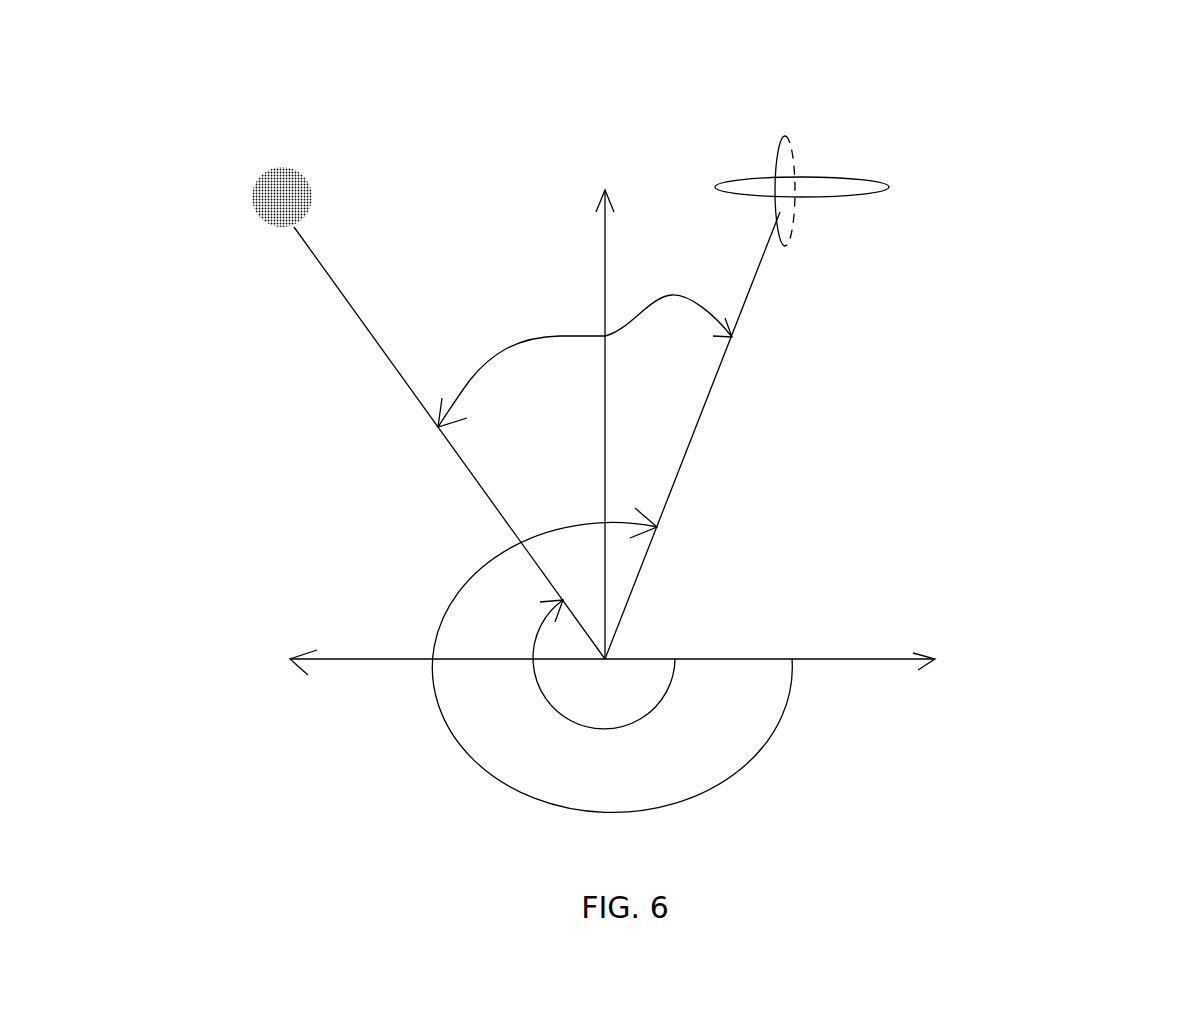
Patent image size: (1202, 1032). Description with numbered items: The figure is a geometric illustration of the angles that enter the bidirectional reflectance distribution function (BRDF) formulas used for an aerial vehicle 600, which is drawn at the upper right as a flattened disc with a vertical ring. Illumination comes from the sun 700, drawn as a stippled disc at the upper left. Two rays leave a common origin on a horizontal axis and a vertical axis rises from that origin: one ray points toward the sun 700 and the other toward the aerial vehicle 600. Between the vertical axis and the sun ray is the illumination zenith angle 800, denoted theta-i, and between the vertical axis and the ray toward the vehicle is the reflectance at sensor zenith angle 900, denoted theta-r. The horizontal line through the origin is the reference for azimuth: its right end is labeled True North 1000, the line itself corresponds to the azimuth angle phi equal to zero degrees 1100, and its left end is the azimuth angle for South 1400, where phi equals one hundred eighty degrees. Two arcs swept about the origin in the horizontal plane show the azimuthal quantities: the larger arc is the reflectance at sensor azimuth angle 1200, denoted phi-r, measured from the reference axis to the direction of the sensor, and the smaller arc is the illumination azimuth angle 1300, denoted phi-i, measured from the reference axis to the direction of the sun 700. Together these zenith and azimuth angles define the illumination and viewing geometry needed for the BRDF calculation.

The aerial vehicle 600 is at (867, 177).
The sun 700 is at (306, 158).
The illumination zenith angle 800 is at (492, 333).
The reflectance at sensor zenith angle 900 is at (680, 273).
The True North 1000 is at (930, 650).
The azimuth angle phi equals zero degrees 1100 is at (955, 675).
The reflectance at sensor azimuth angle 1200 is at (757, 760).
The illumination azimuth angle 1300 is at (542, 698).
The azimuth angle for South phi equals one hundred eighty degrees 1400 is at (267, 658).